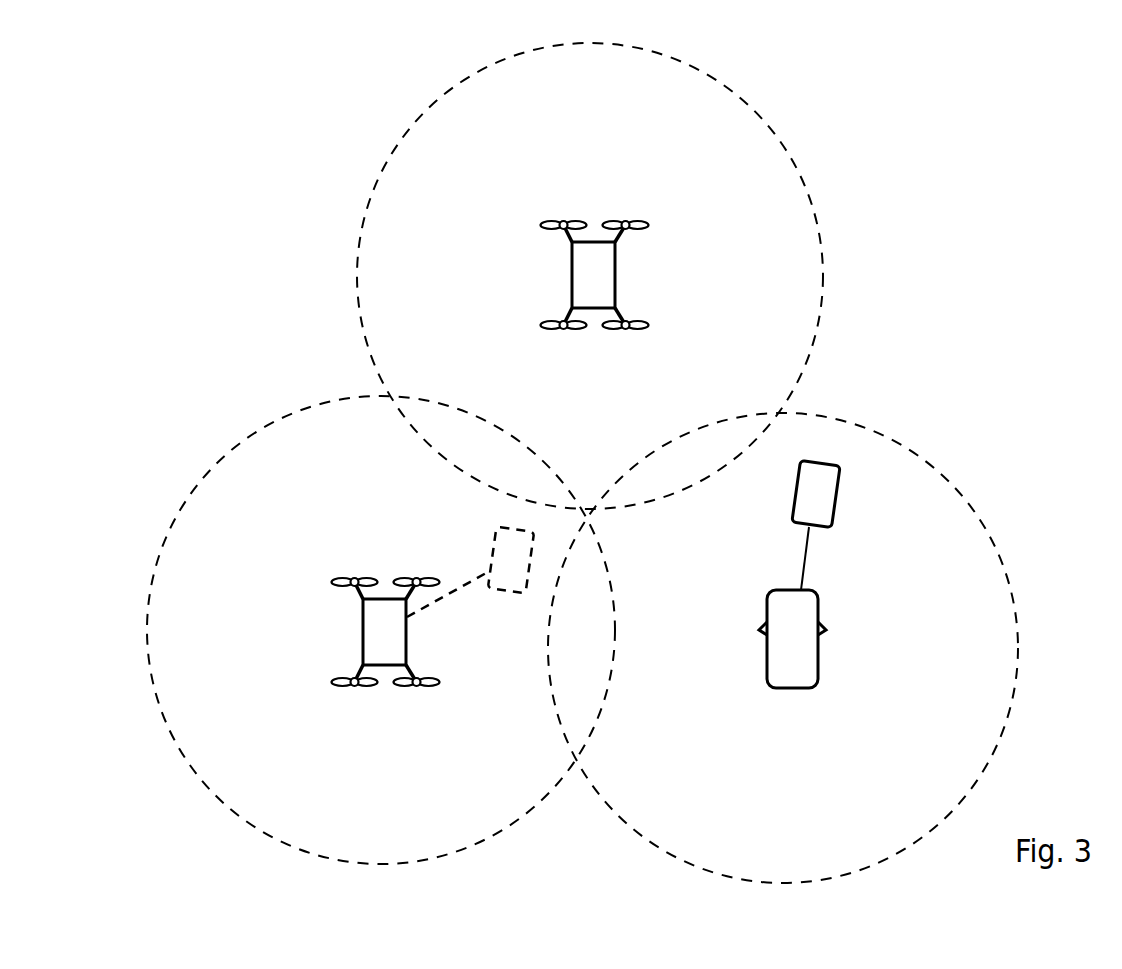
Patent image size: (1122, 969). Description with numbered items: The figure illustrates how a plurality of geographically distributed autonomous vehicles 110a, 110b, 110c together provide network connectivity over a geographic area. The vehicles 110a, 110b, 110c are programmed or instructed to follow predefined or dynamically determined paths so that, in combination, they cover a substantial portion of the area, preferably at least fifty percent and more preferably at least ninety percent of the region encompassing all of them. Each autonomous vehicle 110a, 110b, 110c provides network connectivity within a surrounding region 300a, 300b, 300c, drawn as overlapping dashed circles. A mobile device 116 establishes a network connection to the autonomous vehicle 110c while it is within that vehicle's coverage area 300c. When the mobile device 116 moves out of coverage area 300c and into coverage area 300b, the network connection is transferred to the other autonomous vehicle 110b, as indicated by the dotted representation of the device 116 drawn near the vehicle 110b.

The region 300a is at (820, 207).
The coverage area 300b is at (237, 440).
The coverage area 300c is at (926, 455).
The autonomous vehicle 110a is at (615, 294).
The autonomous vehicle 110b is at (362, 650).
The autonomous vehicle 110c is at (818, 663).
The mobile device 116 is at (869, 520).